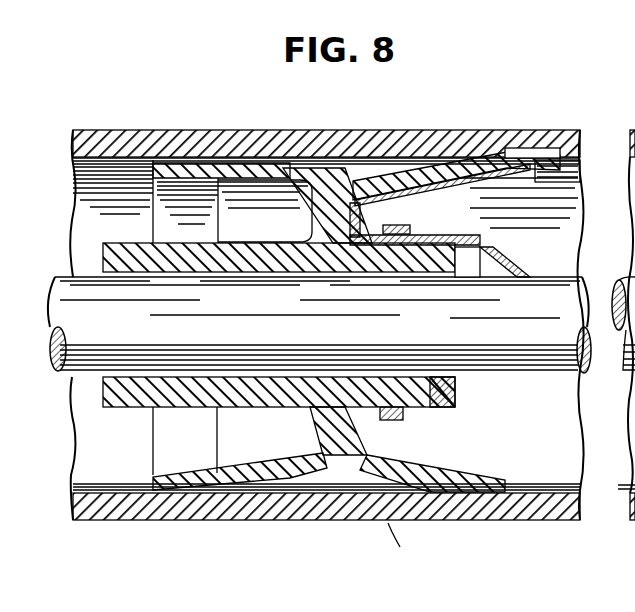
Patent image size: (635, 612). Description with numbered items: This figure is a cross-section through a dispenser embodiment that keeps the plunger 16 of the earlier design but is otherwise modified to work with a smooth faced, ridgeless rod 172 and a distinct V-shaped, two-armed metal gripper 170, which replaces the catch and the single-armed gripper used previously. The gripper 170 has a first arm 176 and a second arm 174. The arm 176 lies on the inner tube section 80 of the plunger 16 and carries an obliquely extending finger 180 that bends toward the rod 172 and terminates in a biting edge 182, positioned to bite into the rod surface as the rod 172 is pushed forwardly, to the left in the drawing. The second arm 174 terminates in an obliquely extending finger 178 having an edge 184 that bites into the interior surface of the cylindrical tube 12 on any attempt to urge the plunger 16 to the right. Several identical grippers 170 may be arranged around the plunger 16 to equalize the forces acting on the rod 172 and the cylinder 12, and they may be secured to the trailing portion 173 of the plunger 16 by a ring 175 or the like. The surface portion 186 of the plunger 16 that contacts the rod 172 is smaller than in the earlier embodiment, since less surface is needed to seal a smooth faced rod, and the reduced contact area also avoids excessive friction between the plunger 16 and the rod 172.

The cylindrical tube 12 is at (388, 523).
The plunger 16 is at (268, 172).
The inner tube section 80 is at (298, 272).
The gripper 170 is at (491, 229).
The rod 172 is at (205, 382).
The trailing portion 173 is at (453, 397).
The second arm 174 is at (438, 198).
The ring 175 is at (403, 418).
The first arm 176 is at (422, 230).
The finger 178 is at (580, 175).
The finger 180 is at (515, 268).
The biting edge 182 is at (513, 280).
The edge 184 is at (540, 158).
The surface portion 186 is at (343, 272).